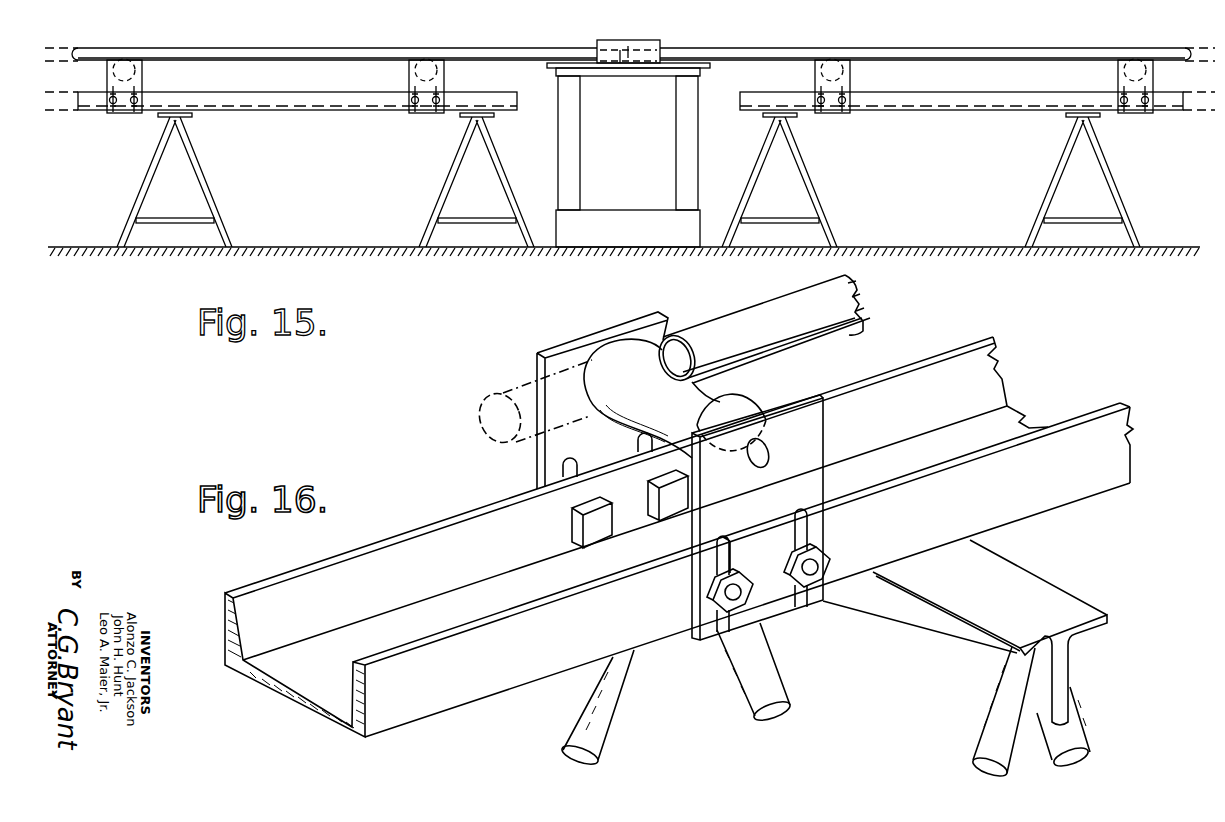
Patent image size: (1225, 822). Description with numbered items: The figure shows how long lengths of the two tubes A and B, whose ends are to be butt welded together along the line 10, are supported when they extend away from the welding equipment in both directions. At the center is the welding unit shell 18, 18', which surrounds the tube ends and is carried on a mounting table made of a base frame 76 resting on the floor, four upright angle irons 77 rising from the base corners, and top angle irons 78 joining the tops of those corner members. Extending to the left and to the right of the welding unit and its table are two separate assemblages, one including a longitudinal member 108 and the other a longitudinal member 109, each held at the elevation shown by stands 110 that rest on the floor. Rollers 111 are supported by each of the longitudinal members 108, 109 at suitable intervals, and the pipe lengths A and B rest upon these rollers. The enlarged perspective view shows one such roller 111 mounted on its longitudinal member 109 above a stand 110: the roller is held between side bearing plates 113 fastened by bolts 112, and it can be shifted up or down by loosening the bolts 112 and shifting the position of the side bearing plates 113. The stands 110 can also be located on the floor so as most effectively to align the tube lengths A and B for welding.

In FIG. 15, the tube A is at (543, 47).
In FIG. 15, the tube B is at (725, 47).
In FIG. 16, the tube B is at (870, 290).
In FIG. 15, the line of butt welding 10 is at (630, 58).
In FIG. 15, the shell 18 is at (608, 79).
In FIG. 15, the shell 18' is at (656, 34).
In FIG. 15, the base frame 76 is at (557, 226).
In FIG. 15, the upright angle irons 77 is at (557, 158).
In FIG. 15, the top angle irons 78 is at (634, 72).
In FIG. 15, the longitudinal member 108 is at (330, 112).
In FIG. 15, the longitudinal member 109 is at (1003, 112).
In FIG. 16, the longitudinal member 109 is at (1012, 408).
In FIG. 15, the stands 110 is at (143, 200).
In FIG. 16, the stands 110 is at (850, 617).
In FIG. 15, the rollers 111 is at (142, 72).
In FIG. 16, the rollers 111 is at (745, 398).
In FIG. 15, the bolts 112 is at (134, 113).
In FIG. 16, the bolts 112 is at (740, 572).
In FIG. 15, the side bearing plates 113 is at (107, 72).
In FIG. 16, the side bearing plates 113 is at (590, 338).